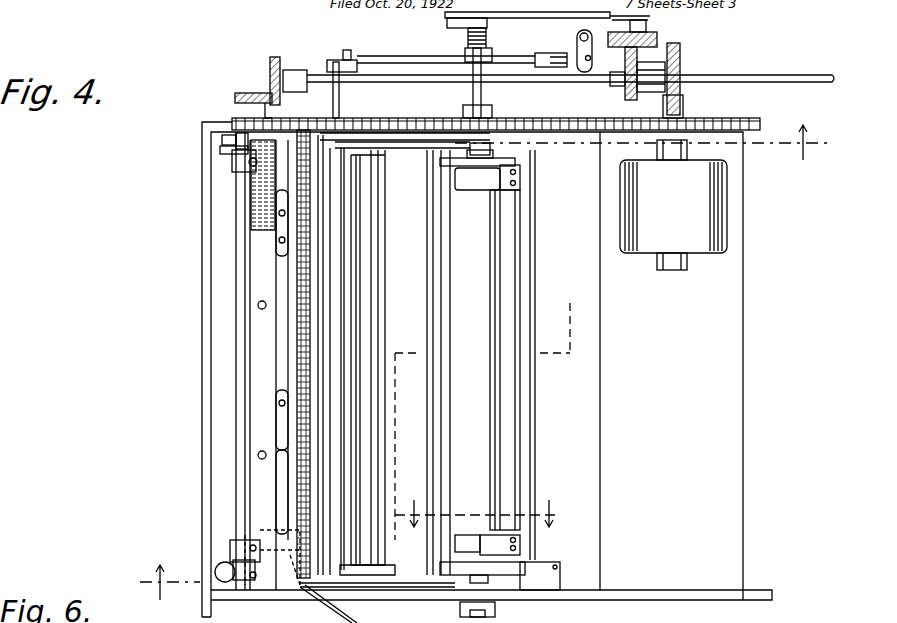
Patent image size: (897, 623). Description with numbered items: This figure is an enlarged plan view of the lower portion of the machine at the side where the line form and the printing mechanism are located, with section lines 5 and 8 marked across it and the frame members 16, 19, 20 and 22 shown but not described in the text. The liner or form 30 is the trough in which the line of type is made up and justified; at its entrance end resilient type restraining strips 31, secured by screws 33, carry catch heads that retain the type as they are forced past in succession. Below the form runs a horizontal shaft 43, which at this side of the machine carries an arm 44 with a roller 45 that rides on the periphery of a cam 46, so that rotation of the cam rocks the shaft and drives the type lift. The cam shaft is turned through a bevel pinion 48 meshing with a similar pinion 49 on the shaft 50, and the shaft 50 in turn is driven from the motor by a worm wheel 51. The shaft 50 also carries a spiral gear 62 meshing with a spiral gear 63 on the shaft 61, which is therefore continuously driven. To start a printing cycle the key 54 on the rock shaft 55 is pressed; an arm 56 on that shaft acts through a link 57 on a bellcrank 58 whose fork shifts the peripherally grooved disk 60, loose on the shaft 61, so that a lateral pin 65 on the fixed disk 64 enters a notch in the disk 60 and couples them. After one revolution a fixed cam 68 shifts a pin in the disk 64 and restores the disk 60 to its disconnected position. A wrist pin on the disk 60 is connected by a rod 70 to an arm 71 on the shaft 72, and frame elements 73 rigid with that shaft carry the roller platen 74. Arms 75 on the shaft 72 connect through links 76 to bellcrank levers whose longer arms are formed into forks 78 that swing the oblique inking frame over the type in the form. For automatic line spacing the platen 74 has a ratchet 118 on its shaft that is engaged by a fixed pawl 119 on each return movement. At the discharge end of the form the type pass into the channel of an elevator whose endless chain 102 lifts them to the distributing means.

The roller 45 is at (222, 138).
The arm 44 is at (220, 150).
The cam 46 is at (236, 158).
The liner or form 30 is at (297, 360).
The screws or fasteners 33 is at (280, 420).
The resilient type restraining strips 31 is at (280, 452).
The shaft 43 is at (236, 448).
The roller 19 is at (402, 568).
The platen 74 is at (488, 404).
The arms 75 is at (478, 190).
The forks 78 is at (493, 153).
The endless chain 102 is at (642, 143).
The section line 5- 5 is at (480, 362).
The section line 8- 8 is at (483, 513).
The bevel pinion 48 is at (236, 96).
The bevel pinion 49 is at (282, 80).
The shaft 50 is at (386, 84).
The rock shaft 55 is at (333, 96).
The arm 56 is at (338, 60).
The link 57 is at (405, 58).
The motor shaft 61 is at (540, 53).
The shaft 72 is at (483, 97).
The arm 71 is at (460, 25).
The frame elements 73 is at (487, 22).
The rod 70 is at (578, 34).
The bellcrank 58 is at (572, 45).
The disk 64 is at (660, 38).
The peripherally grooved disk 60 is at (652, 16).
The lateral pin 65 is at (648, 24).
The spiral gear 63 is at (624, 82).
The fixed cam 68 is at (610, 80).
The spiral gear 62 is at (678, 64).
The worm wheel 51 is at (681, 48).
The links 76 is at (446, 114).
The roller 22 is at (220, 565).
The key 54 is at (240, 580).
The rail 16 is at (395, 590).
The ratchet 118 is at (470, 530).
The fixed pawl 119 is at (540, 576).
The base 20 is at (720, 600).